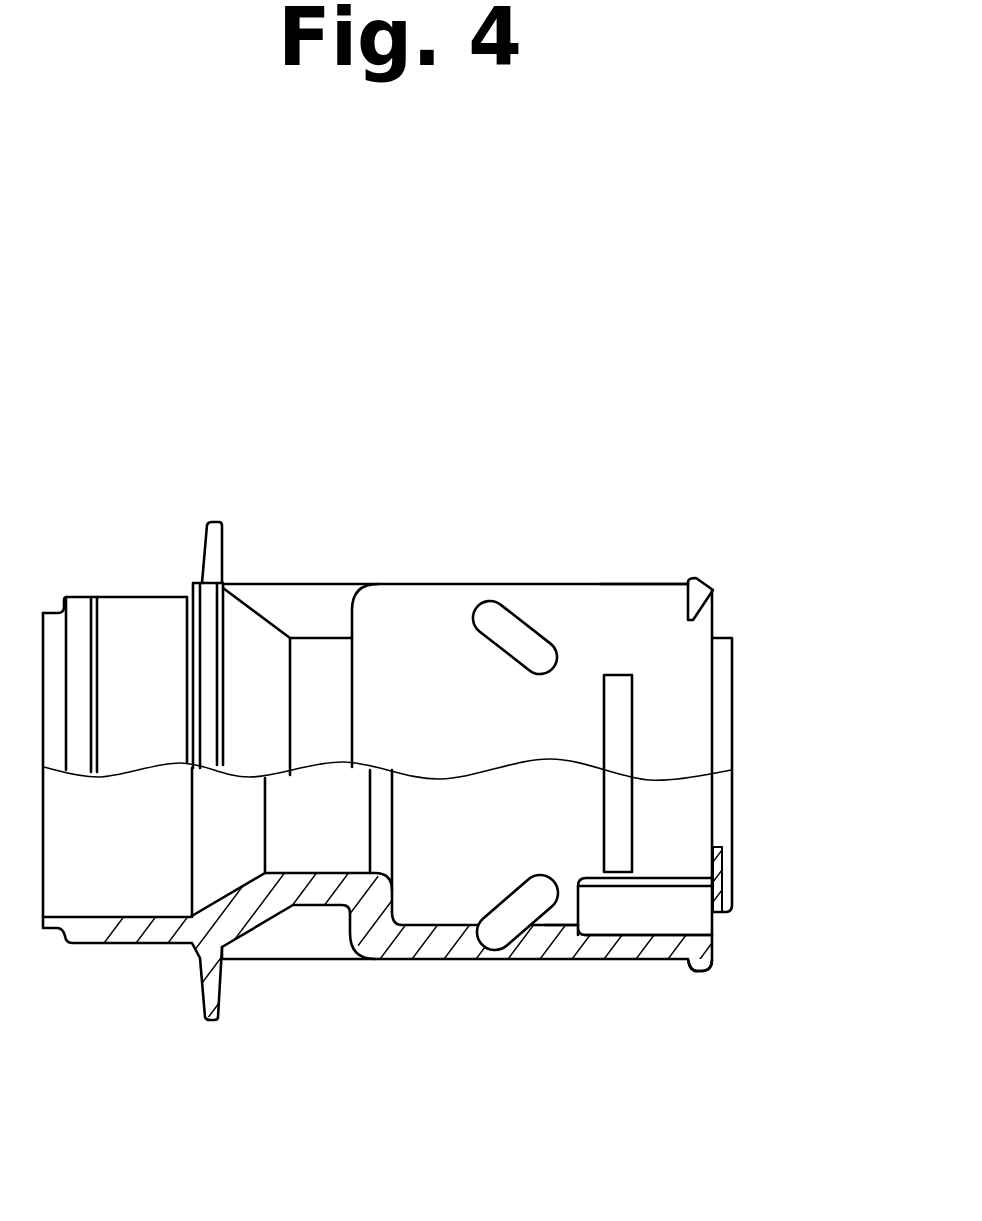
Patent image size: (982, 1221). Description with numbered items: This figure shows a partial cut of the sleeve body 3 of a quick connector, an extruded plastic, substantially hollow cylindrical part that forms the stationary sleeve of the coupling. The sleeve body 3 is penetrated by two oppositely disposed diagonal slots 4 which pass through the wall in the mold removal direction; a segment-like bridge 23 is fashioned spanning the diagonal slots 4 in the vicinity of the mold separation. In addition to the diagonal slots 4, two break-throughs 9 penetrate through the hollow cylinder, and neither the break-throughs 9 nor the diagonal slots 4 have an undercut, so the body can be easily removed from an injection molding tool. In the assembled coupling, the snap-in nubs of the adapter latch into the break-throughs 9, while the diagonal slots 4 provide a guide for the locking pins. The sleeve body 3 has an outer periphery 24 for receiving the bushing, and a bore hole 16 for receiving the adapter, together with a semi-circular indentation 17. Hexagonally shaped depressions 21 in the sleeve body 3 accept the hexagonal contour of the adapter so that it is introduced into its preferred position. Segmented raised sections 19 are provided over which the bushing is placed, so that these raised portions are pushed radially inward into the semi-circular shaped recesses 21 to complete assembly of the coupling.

The sleeve body 3 is at (377, 518).
The diagonal slots 4 is at (530, 643).
The break-throughs 9 is at (602, 735).
The bore hole 16 is at (552, 932).
The semi-circular indentation 17 is at (670, 928).
The segmented raised sections 19 is at (700, 572).
The hexagonally shaped depressions 21 is at (722, 830).
The segment-like bridge 23 is at (493, 593).
The outer periphery 24 is at (637, 582).